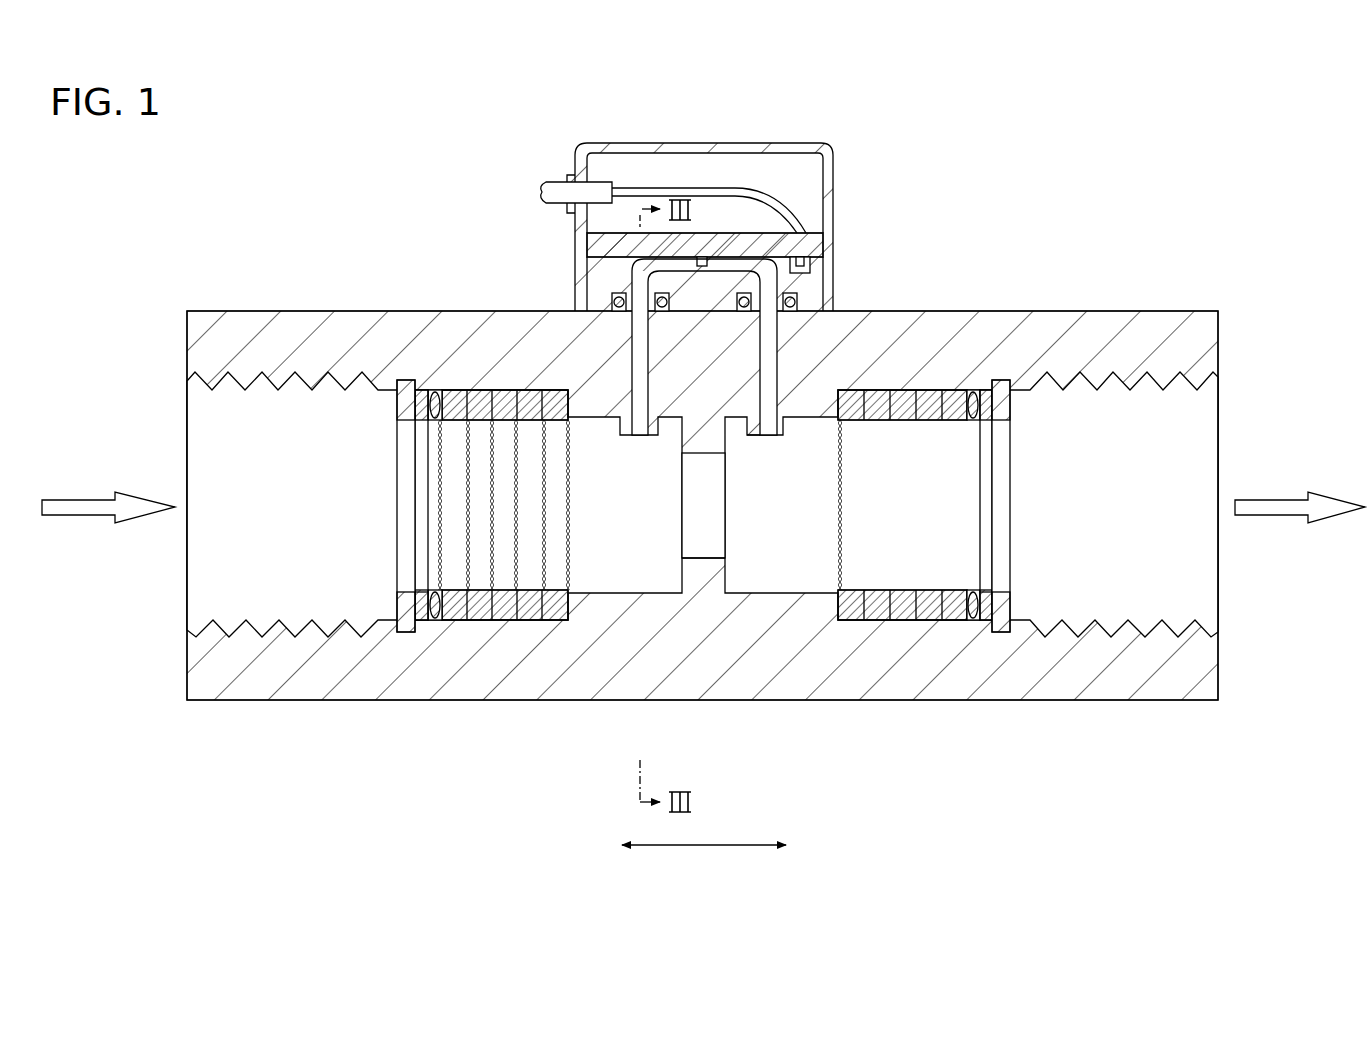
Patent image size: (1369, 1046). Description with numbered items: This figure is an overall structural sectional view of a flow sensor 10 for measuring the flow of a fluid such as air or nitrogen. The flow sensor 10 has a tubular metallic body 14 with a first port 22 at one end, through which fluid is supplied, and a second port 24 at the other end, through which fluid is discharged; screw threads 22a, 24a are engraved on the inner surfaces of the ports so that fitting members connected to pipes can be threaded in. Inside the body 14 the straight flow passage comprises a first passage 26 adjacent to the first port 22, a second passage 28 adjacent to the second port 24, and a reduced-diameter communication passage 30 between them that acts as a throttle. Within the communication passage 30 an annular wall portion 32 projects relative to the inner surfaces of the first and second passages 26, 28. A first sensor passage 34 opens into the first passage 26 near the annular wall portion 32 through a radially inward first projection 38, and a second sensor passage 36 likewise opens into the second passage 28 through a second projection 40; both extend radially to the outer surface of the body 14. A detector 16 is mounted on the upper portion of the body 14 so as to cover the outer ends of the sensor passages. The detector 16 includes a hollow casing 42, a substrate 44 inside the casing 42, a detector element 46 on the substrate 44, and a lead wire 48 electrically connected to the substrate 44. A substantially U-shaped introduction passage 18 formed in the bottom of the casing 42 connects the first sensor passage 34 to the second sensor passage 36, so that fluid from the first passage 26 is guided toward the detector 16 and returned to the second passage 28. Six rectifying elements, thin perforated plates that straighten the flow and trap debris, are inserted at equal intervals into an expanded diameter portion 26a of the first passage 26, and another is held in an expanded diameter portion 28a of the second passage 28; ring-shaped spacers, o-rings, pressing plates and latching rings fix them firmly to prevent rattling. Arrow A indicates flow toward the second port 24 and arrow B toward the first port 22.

The flow sensor 10 is at (1190, 141).
The body 14 is at (703, 495).
The detector 16 is at (692, 198).
The introduction passage 18 is at (658, 364).
The first port 22 is at (395, 504).
The screw thread 22a is at (203, 419).
The second port 24 is at (1012, 504).
The screw thread 24a is at (1185, 622).
The first passage 26 is at (530, 569).
The expanded diameter portion 26a is at (515, 598).
The second passage 28 is at (879, 569).
The expanded diameter portion 28a is at (893, 622).
The communication passage 30 is at (716, 505).
The annular wall portion 32 is at (716, 565).
The first sensor passage 34 is at (638, 348).
The second sensor passage 36 is at (767, 355).
The first projection 38 is at (650, 437).
The second projection 40 is at (749, 437).
The casing 42 is at (633, 148).
The substrate 44 is at (812, 240).
The detector element 46 is at (808, 268).
The lead wire 48 is at (557, 187).